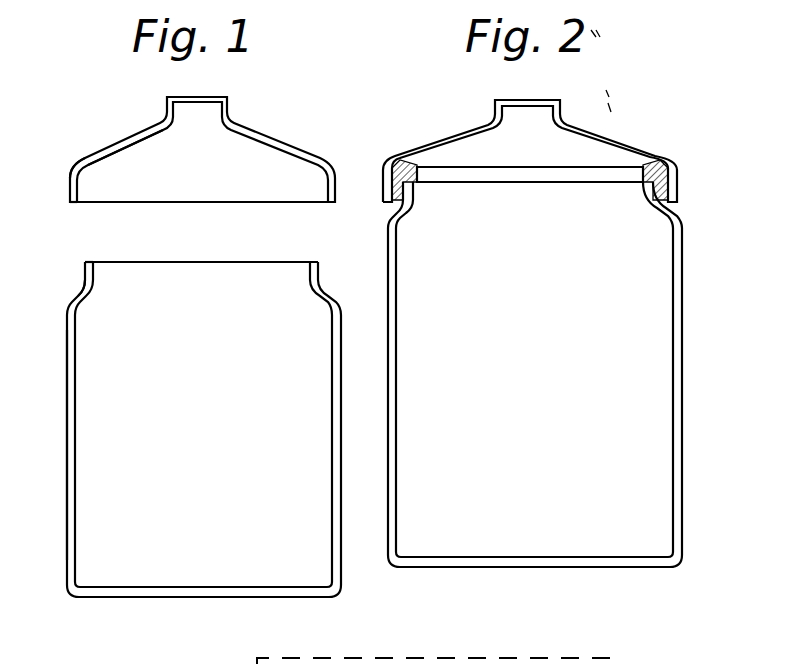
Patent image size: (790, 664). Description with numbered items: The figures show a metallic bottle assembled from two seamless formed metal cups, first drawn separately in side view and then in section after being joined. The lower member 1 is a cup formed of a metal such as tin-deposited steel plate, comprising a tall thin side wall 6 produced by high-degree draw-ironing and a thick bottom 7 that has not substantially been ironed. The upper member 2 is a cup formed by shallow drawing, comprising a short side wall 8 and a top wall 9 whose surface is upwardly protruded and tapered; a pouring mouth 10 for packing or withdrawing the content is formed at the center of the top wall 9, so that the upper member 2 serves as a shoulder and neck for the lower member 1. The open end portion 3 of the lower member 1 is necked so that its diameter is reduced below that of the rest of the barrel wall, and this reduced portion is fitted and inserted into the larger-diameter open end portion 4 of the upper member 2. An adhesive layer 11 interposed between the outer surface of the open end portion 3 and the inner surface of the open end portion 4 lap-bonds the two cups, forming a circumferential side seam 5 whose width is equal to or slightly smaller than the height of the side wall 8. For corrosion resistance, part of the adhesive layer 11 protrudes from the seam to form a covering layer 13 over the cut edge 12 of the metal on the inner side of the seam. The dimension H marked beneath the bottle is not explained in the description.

In FIG. 1, the lower member 1 is at (192, 412).
In FIG. 1, the upper member 2 is at (189, 179).
In FIG. 1, the open end portion 3 is at (84, 288).
In FIG. 1, the open end portion 4 is at (70, 203).
In FIG. 2, the side seam 5 is at (384, 168).
In FIG. 1, the thin side wall 6 is at (68, 441).
In FIG. 2, the thin side wall 6 is at (388, 440).
In FIG. 1, the bottom 7 is at (233, 598).
In FIG. 2, the bottom 7 is at (581, 570).
In FIG. 1, the side wall 8 is at (75, 163).
In FIG. 1, the top wall 9 is at (136, 133).
In FIG. 1, the pouring mouth 10 is at (214, 97).
In FIG. 2, the pouring mouth 10 is at (520, 100).
In FIG. 2, the adhesive layer 11 is at (664, 162).
In FIG. 1, the cut edge 12 is at (87, 262).
In FIG. 2, the covering layer 13 is at (624, 160).
In FIG. 2, the height dimension H is at (437, 646).